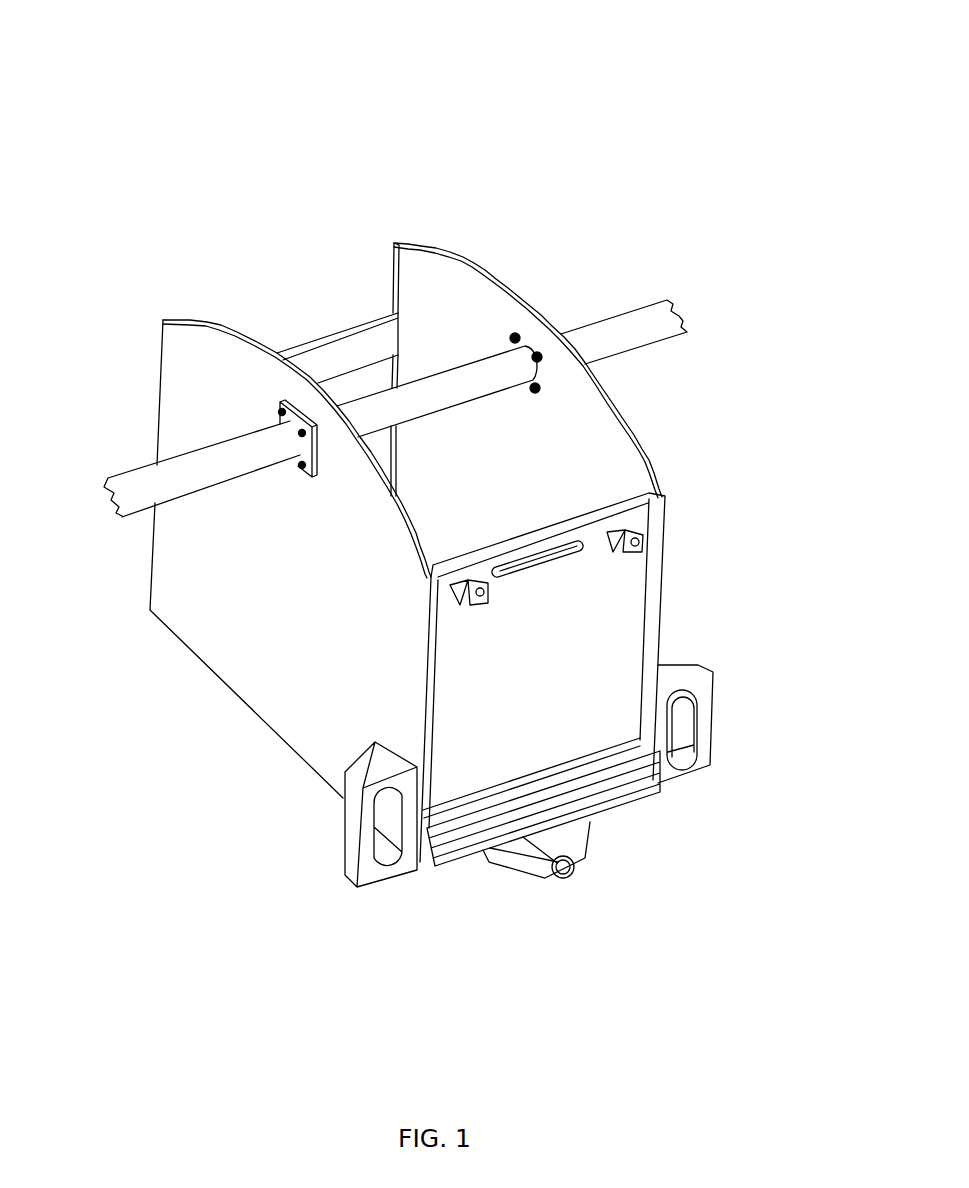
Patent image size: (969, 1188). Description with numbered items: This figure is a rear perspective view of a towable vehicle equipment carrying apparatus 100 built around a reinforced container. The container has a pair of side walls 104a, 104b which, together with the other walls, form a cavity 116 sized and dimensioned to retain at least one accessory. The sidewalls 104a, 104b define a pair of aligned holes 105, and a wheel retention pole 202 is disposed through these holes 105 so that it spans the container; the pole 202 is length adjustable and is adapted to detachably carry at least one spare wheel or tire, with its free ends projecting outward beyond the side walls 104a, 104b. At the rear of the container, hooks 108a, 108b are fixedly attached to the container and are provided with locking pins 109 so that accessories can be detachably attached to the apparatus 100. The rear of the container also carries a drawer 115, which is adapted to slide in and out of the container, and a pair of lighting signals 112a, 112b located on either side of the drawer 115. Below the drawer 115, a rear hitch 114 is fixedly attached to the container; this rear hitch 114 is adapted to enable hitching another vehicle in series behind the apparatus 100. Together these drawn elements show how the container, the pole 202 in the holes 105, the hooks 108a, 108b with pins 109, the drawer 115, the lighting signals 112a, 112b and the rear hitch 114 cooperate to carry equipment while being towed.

The towable vehicle equipment carrying apparatus 100 is at (135, 172).
The side wall 104a is at (220, 393).
The side wall 104b is at (472, 305).
The wheel retention pole 202 is at (444, 390).
The aligned holes 105 is at (310, 473).
The cavity 116 is at (460, 527).
The locking pins 109 is at (640, 538).
The hook 108a is at (470, 603).
The hook 108b is at (633, 553).
The lighting signal 112a is at (362, 848).
The lighting signal 112b is at (700, 740).
The drawer 115 is at (620, 787).
The rear hitch 114 is at (568, 878).